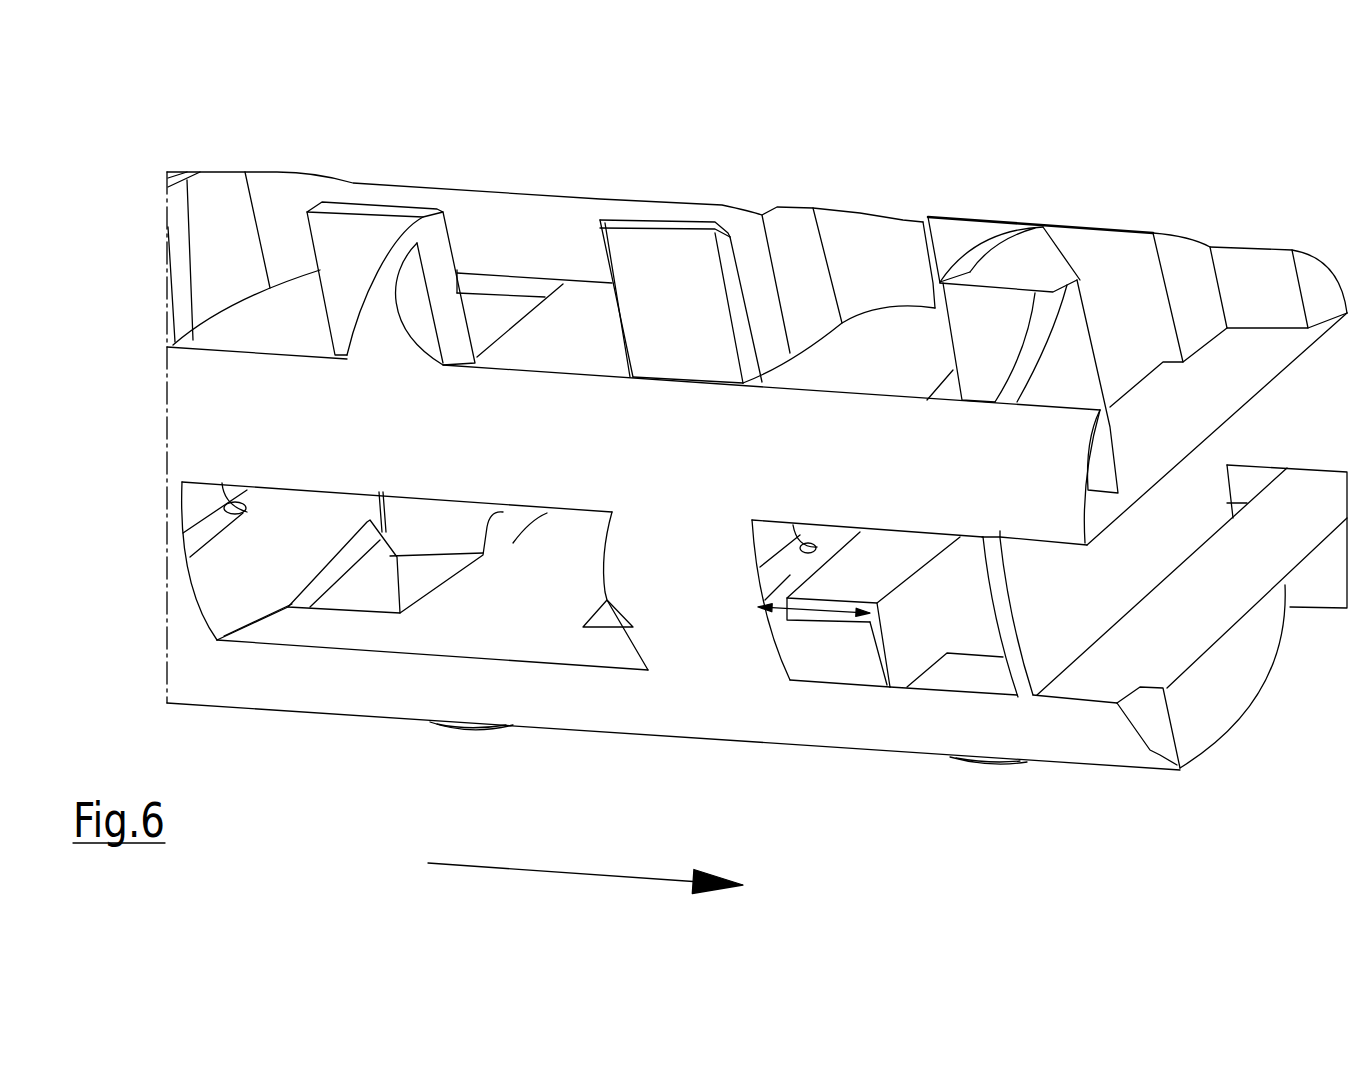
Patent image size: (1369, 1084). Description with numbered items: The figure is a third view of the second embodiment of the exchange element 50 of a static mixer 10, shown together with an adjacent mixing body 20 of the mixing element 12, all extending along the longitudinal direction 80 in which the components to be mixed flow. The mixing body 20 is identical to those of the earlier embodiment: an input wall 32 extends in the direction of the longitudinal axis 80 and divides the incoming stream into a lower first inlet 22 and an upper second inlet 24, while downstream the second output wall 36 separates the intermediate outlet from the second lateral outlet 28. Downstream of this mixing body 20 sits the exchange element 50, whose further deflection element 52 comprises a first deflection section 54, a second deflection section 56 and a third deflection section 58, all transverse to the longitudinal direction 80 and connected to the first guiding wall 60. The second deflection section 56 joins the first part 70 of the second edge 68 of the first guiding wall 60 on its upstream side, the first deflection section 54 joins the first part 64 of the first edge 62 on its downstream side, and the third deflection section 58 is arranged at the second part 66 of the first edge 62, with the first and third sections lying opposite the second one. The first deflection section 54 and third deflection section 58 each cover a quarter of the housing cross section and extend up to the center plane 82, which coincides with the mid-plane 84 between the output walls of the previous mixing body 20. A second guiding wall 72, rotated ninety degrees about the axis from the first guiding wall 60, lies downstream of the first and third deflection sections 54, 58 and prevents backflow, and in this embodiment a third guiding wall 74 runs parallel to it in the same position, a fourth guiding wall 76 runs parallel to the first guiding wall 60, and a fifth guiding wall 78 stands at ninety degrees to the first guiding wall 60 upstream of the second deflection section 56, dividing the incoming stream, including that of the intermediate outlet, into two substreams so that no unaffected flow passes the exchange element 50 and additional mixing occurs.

The static mixer 10 is at (701, 409).
The mixing element 12 is at (122, 130).
The mixing body 20 is at (318, 777).
The first inlet 22 is at (638, 325).
The second inlet 24 is at (663, 212).
The second lateral outlet 28 is at (789, 272).
The input wall 32 is at (680, 297).
The second output wall 36 is at (892, 367).
The exchange element 50 is at (957, 862).
The further deflection element 52 is at (1020, 677).
The first deflection section 54 is at (1240, 690).
The second deflection section 56 is at (1030, 248).
The third deflection section 58 is at (1070, 386).
The first guiding wall 60 is at (1002, 342).
The first edge 62 is at (1224, 497).
The first part of first edge 64 is at (1175, 732).
The second part of first edge 66 is at (1102, 363).
The second edge 68 is at (904, 222).
The first part of second edge 70 is at (928, 272).
The second guiding wall 72 is at (1235, 602).
The third guiding wall 74 is at (1177, 422).
The fourth guiding wall 76 is at (1140, 296).
The fifth guiding wall 78 is at (883, 576).
The longitudinal direction 80 is at (585, 865).
The center plane 82 is at (771, 713).
The mid-plane 84 is at (810, 613).